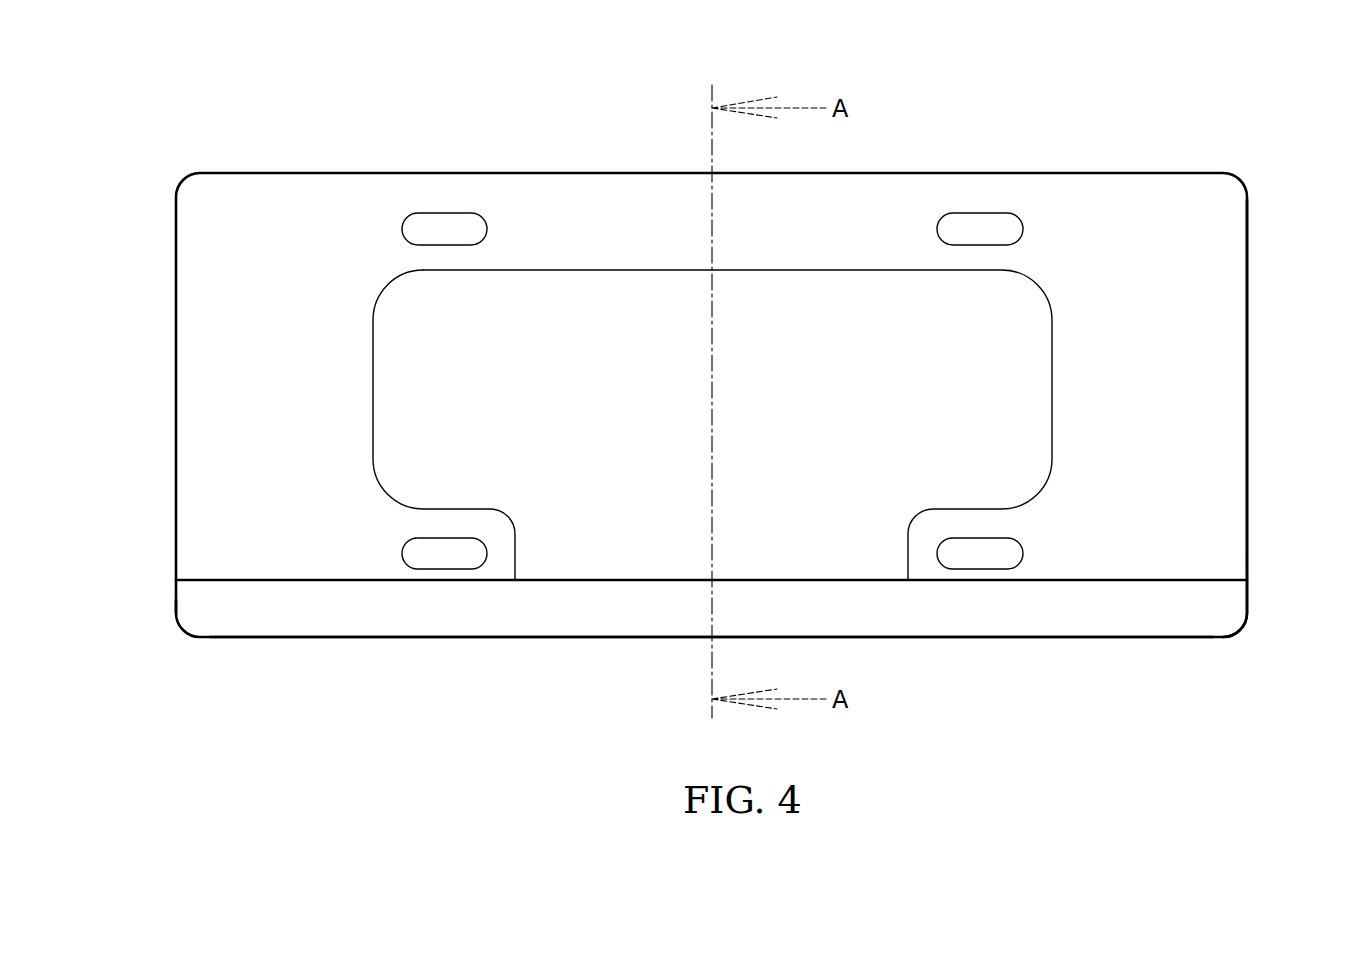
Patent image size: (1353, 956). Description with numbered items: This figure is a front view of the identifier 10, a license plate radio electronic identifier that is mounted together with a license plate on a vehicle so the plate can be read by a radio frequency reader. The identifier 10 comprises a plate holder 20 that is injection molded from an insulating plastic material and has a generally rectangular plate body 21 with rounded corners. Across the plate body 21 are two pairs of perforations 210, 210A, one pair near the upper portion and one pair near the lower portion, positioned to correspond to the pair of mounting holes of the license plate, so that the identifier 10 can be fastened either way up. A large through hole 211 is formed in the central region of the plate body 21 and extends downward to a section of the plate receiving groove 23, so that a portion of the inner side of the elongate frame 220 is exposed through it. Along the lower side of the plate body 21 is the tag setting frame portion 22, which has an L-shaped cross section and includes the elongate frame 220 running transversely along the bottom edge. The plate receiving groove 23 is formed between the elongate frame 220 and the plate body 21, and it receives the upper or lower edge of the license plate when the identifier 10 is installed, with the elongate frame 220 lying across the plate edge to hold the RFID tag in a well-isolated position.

The identifier 10 is at (1116, 163).
The plate holder 20 is at (1247, 391).
The plate body 21 is at (1188, 295).
The tag setting frame portion 22 is at (175, 600).
The plate receiving groove 23 is at (1255, 605).
The perforations 210 is at (438, 228).
The perforations 210A is at (430, 555).
The through hole 211 is at (557, 560).
The elongate frame 220 is at (280, 610).